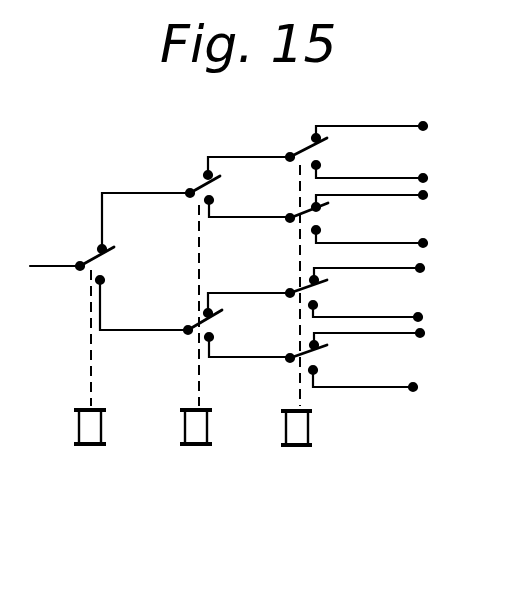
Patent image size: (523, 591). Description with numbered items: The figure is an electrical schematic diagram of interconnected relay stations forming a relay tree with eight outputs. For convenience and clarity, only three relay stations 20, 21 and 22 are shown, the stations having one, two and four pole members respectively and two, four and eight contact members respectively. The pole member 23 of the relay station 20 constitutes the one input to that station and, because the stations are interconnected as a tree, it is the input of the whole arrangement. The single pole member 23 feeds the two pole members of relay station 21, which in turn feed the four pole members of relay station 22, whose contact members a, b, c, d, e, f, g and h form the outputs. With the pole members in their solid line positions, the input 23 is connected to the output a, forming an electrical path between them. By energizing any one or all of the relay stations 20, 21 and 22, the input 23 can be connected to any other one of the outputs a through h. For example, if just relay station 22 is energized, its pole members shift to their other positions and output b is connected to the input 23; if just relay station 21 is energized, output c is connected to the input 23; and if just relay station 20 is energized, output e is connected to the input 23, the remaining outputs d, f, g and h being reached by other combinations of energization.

The relay station 20 is at (89, 474).
The relay station 21 is at (193, 476).
The relay station 22 is at (291, 478).
The pole member 23 is at (70, 268).
The contact member a is at (427, 126).
The contact member b is at (427, 178).
The contact member c is at (427, 195).
The contact member d is at (427, 243).
The contact member e is at (424, 268).
The contact member f is at (422, 317).
The contact member g is at (424, 333).
The contact member h is at (435, 386).